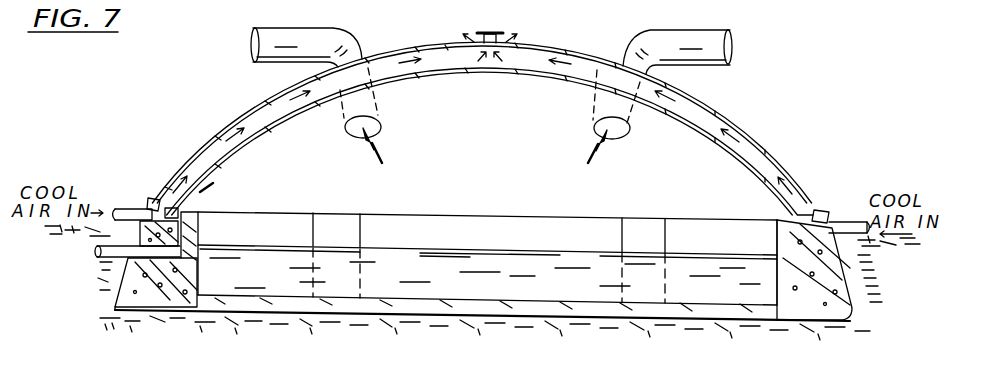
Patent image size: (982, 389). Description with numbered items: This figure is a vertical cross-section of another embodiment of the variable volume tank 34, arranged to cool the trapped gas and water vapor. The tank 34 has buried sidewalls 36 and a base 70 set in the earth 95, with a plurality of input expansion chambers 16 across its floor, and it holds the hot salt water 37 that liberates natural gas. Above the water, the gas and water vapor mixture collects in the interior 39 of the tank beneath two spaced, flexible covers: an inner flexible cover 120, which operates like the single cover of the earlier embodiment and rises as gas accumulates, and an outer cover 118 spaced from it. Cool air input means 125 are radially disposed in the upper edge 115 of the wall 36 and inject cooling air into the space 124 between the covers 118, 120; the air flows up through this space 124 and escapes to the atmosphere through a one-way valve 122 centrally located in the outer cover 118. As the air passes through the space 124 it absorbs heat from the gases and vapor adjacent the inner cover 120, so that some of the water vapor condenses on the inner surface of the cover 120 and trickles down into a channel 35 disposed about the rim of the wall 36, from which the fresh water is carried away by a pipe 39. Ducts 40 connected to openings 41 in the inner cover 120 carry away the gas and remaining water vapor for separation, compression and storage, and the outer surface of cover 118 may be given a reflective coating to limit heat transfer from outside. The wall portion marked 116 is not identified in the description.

The input expansion chamber 16 is at (362, 229).
The tank 34 is at (188, 120).
The channel 35 is at (200, 192).
The sidewall 36 is at (126, 278).
The hot salt water 37 is at (485, 290).
The interior of tank 39 is at (495, 133).
The duct 40 is at (253, 48).
The opening 41 is at (490, 130).
The base 70 is at (493, 320).
The earth 95 is at (330, 360).
The upper edge of wall 115 is at (829, 202).
The pool wall 116 is at (200, 224).
The outer flexible cover 118 is at (708, 108).
The inner flexible cover 120 is at (726, 148).
The one-way valve 122 is at (478, 29).
The space between covers 124 is at (443, 50).
The cool air input means 125 is at (136, 208).